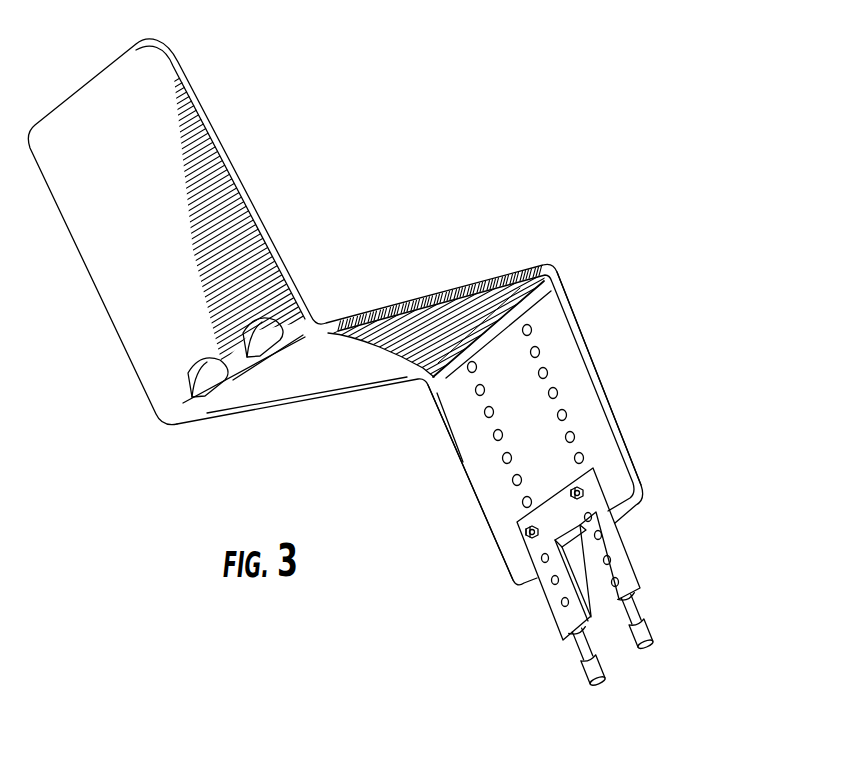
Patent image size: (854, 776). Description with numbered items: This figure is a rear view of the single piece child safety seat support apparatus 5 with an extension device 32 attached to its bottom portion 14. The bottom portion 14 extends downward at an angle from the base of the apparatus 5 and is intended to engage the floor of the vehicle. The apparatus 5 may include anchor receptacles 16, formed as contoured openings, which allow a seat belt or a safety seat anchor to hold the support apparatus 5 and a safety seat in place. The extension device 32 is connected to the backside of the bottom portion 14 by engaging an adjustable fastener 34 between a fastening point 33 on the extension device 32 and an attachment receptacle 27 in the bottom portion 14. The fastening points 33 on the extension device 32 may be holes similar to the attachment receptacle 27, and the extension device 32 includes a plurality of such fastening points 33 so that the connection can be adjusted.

The child safety seat support apparatus 5 is at (367, 218).
The bottom portion 14 is at (573, 370).
The anchor receptacles 16 is at (207, 383).
The attachment receptacle 27 is at (494, 437).
The extension device 32 is at (547, 593).
The fastening points 33 is at (602, 535).
The adjustable fastener 34 is at (532, 528).